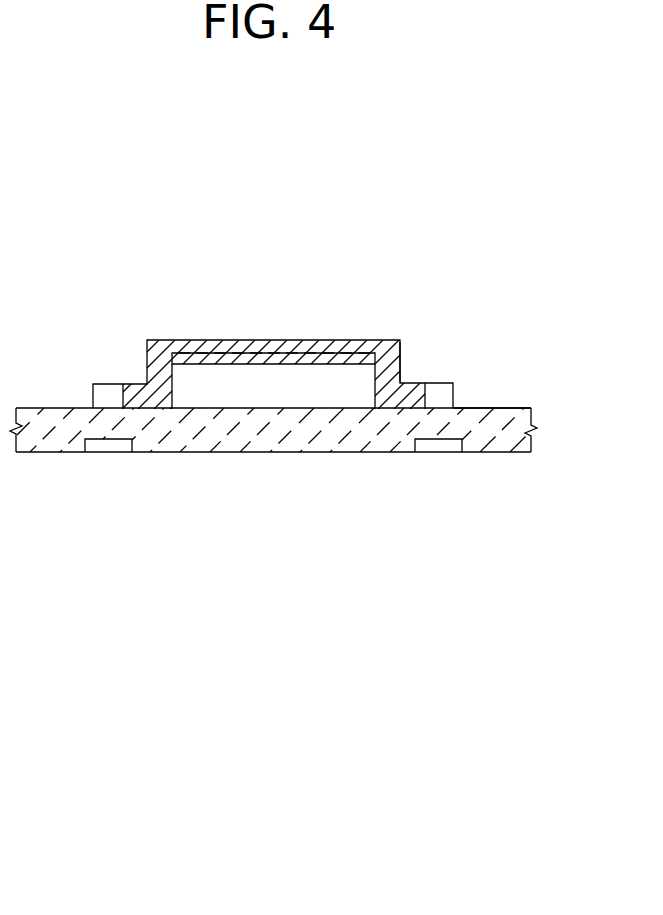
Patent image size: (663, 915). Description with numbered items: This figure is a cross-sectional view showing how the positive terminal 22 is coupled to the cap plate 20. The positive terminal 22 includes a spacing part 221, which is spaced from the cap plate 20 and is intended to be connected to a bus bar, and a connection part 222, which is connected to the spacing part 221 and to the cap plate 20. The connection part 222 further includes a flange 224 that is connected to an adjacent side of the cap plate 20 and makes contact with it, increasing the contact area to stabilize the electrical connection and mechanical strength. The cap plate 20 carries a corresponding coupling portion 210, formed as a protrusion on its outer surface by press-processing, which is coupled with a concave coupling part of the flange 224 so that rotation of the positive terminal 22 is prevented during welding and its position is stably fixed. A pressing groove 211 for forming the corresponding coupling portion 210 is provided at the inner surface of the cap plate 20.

The cap plate 20 is at (505, 432).
The positive terminal 22 is at (284, 332).
The corresponding coupling portion 210 is at (453, 396).
The pressing groove 211 is at (107, 452).
The spacing part 221 is at (333, 340).
The connection part 222 is at (400, 363).
The flange 224 is at (440, 398).